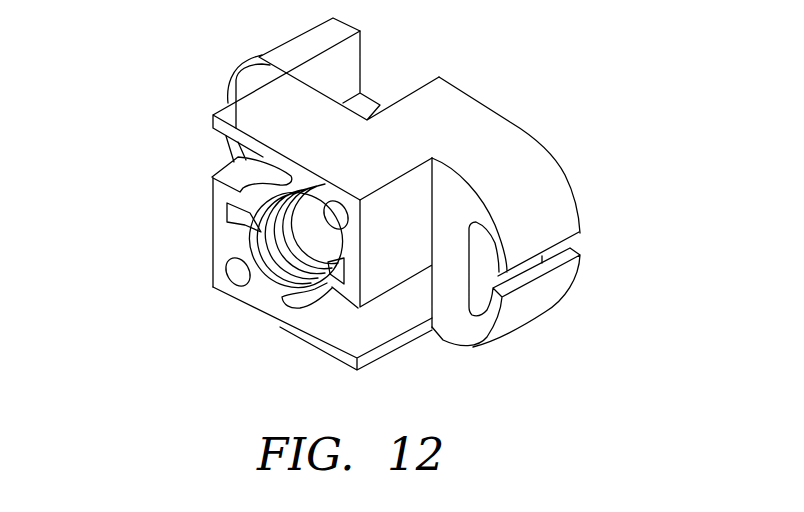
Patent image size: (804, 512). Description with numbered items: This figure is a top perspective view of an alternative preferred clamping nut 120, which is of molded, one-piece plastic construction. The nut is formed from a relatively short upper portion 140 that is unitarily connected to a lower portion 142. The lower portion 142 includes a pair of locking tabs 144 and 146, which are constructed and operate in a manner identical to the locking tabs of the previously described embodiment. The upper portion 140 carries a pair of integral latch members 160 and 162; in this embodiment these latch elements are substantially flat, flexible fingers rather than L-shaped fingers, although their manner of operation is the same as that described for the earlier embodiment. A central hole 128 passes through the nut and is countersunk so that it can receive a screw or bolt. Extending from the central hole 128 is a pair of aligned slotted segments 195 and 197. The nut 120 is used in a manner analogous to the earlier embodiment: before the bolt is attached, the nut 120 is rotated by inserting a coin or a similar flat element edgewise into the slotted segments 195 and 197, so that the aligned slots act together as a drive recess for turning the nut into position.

The clamping nut 120 is at (187, 162).
The central hole 128 is at (272, 262).
The upper portion 140 is at (400, 202).
The lower portion 142 is at (502, 132).
The locking tab 144 is at (283, 45).
The locking tab 146 is at (553, 188).
The latch member 160 is at (340, 358).
The latch member 162 is at (235, 84).
The slotted segment 195 is at (228, 210).
The slotted segment 197 is at (330, 288).